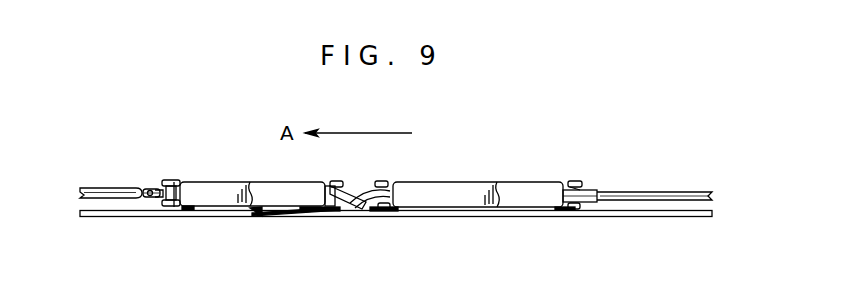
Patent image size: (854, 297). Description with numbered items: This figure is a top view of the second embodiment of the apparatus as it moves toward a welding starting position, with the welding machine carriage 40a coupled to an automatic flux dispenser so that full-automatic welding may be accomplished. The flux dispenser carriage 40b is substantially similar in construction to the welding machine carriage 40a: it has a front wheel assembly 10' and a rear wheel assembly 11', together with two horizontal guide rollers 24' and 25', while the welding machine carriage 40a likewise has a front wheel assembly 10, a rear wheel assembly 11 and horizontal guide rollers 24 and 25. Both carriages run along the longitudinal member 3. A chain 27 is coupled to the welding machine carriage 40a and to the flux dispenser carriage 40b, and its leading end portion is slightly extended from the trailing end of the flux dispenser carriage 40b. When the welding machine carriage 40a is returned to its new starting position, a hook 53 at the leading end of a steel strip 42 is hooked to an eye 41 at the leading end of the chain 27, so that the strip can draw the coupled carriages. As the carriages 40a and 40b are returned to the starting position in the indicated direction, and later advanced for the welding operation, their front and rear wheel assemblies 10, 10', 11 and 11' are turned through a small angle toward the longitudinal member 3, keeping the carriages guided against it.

The longitudinal member 3 is at (639, 217).
The steel strip 42 is at (96, 192).
The chain 27 is at (662, 177).
The flux dispenser carriage 40b is at (236, 187).
The welding machine carriage 40a is at (480, 190).
The horizontal guide roller 25 is at (565, 225).
The front wheel assembly 10 is at (583, 220).
The hook 53 is at (147, 202).
The eye 41 is at (156, 190).
The rear wheel assembly 11' is at (175, 220).
The horizontal guide roller 24' is at (204, 233).
The horizontal guide roller 25' is at (320, 223).
The front wheel assembly 10' is at (350, 220).
The rear wheel assembly 11 is at (375, 220).
The horizontal guide roller 24 is at (399, 233).